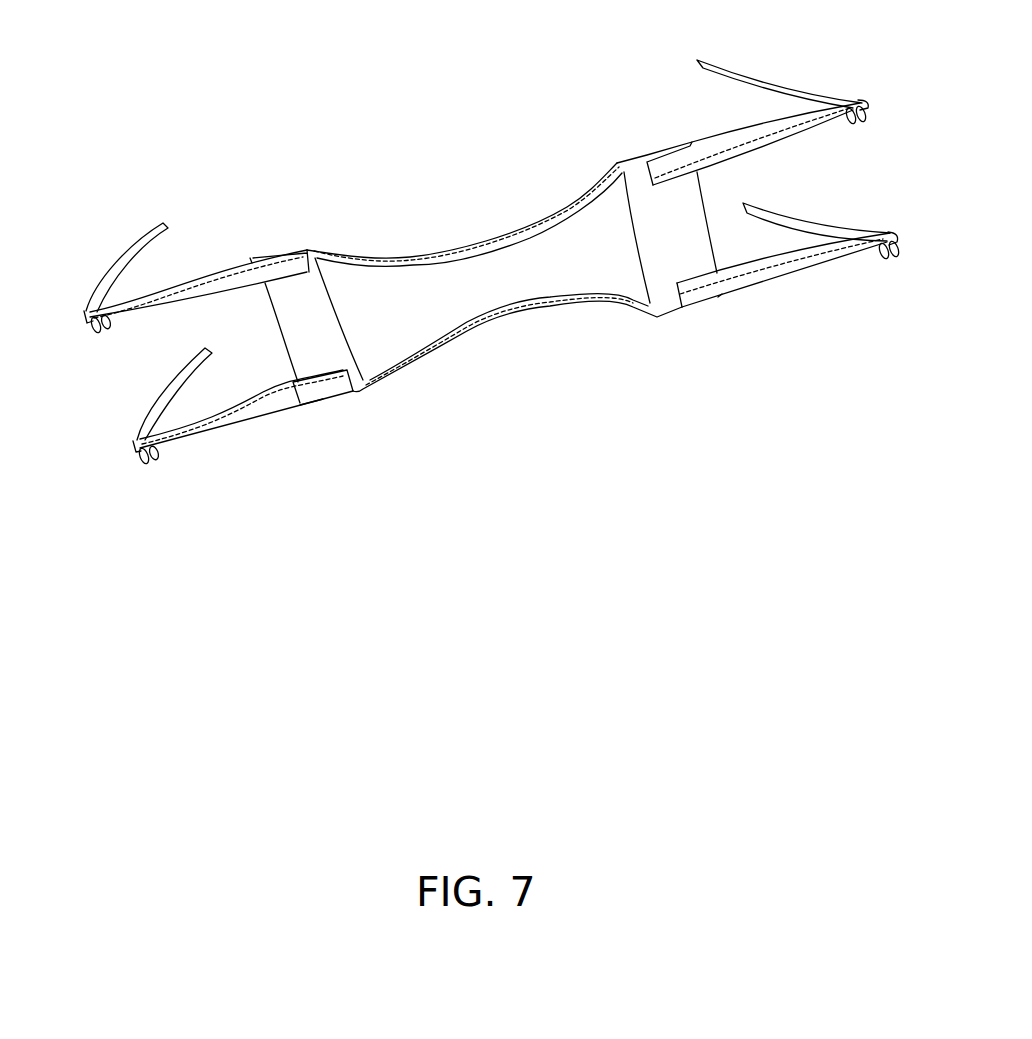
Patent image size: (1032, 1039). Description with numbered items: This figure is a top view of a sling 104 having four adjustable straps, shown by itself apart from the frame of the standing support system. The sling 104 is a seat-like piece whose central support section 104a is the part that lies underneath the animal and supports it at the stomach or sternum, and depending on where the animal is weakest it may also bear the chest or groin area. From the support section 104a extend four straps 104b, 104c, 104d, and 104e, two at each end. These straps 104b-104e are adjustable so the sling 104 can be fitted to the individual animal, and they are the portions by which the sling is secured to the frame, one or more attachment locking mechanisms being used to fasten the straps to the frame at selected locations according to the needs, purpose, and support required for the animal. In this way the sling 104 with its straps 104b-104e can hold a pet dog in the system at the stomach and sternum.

The sling 104 is at (470, 279).
The support section 104a is at (419, 257).
The strap 104b is at (261, 403).
The strap 104c is at (183, 290).
The strap 104d is at (767, 135).
The strap 104e is at (790, 265).